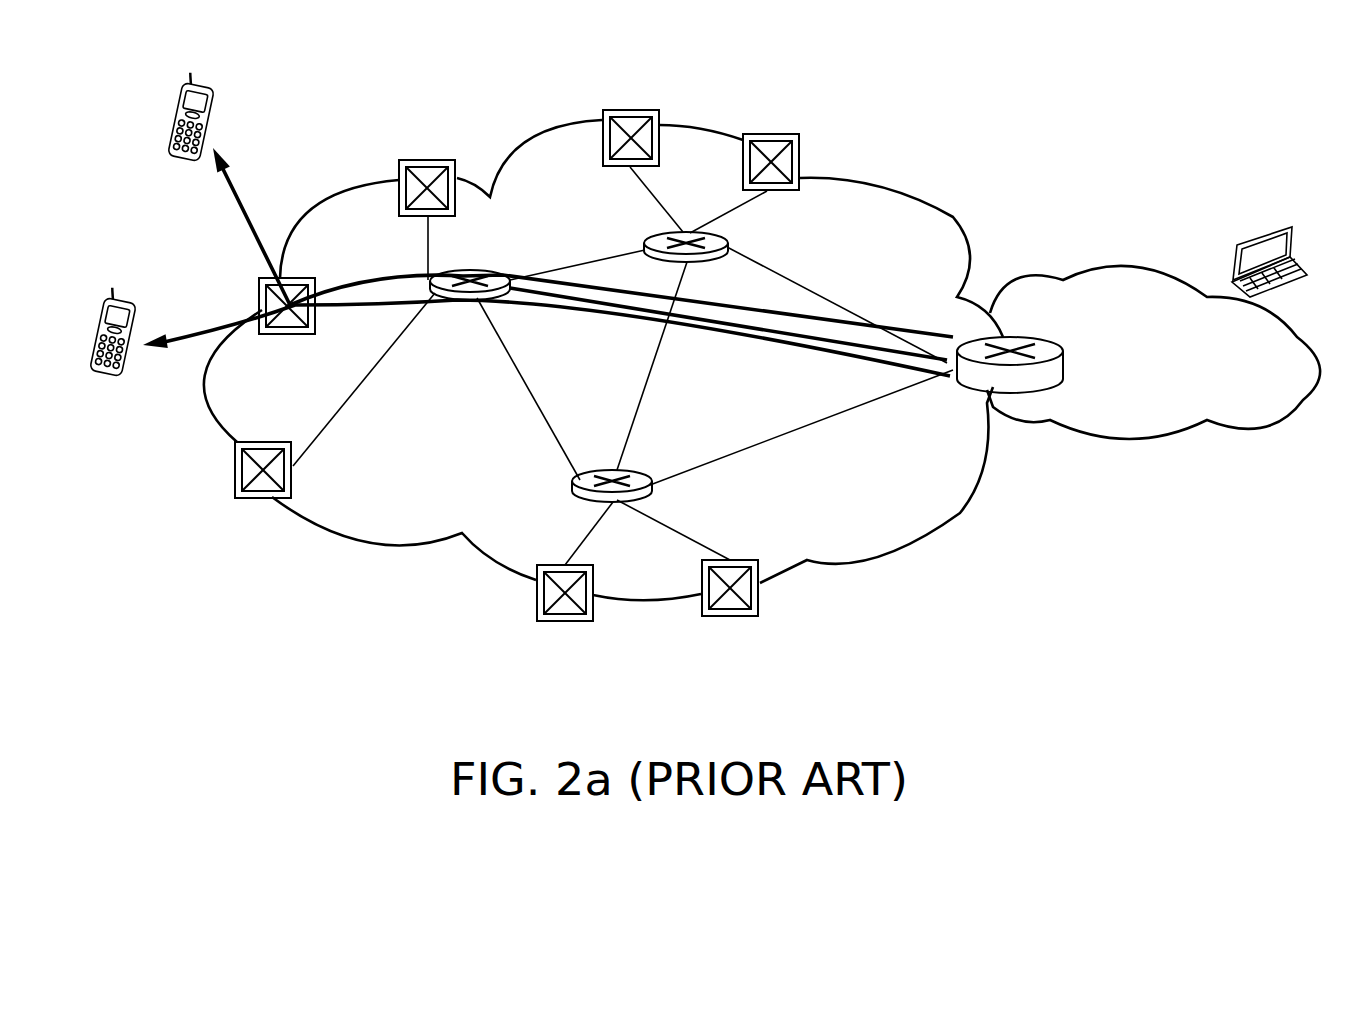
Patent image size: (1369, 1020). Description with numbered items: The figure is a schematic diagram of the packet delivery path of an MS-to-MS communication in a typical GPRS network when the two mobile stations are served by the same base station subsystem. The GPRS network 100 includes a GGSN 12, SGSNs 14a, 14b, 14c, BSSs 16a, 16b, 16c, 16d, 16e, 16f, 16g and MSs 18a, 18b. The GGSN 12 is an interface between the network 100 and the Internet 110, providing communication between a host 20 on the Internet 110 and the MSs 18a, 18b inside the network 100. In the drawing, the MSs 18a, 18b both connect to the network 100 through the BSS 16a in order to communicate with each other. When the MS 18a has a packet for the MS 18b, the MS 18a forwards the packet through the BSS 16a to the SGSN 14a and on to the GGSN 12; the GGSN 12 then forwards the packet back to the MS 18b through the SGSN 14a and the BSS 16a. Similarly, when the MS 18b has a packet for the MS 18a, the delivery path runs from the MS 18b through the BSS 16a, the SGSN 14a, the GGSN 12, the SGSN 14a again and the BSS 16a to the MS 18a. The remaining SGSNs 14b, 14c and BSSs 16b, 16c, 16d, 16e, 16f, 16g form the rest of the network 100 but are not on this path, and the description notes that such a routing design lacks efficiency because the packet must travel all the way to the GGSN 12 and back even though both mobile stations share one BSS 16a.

The GGSN 12 is at (978, 391).
The SGSN 14a is at (484, 258).
The SGSN 14b is at (655, 504).
The SGSN 14c is at (726, 237).
The BSS 16a is at (255, 293).
The BSS 16b is at (427, 157).
The BSS 16c is at (234, 470).
The BSS 16d is at (566, 624).
The BSS 16e is at (731, 618).
The BSS 16f is at (631, 108).
The BSS 16g is at (771, 130).
The MS 18a is at (167, 119).
The MS 18b is at (88, 335).
The host 20 is at (1291, 262).
The GPRS network 100 is at (362, 543).
The Internet 110 is at (1130, 447).